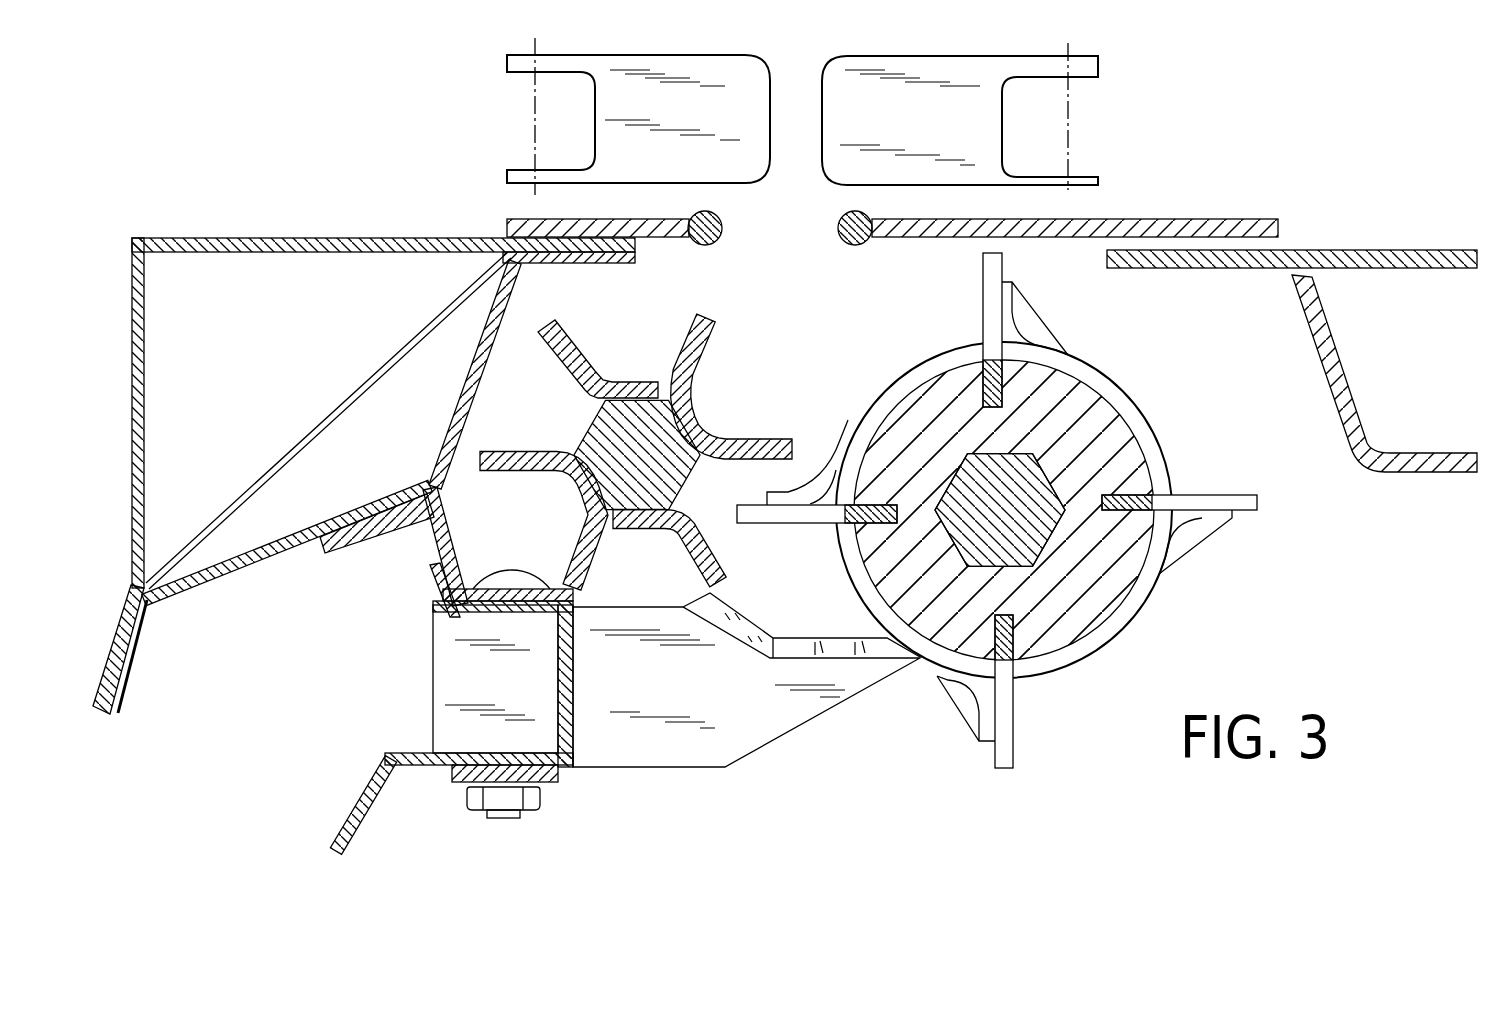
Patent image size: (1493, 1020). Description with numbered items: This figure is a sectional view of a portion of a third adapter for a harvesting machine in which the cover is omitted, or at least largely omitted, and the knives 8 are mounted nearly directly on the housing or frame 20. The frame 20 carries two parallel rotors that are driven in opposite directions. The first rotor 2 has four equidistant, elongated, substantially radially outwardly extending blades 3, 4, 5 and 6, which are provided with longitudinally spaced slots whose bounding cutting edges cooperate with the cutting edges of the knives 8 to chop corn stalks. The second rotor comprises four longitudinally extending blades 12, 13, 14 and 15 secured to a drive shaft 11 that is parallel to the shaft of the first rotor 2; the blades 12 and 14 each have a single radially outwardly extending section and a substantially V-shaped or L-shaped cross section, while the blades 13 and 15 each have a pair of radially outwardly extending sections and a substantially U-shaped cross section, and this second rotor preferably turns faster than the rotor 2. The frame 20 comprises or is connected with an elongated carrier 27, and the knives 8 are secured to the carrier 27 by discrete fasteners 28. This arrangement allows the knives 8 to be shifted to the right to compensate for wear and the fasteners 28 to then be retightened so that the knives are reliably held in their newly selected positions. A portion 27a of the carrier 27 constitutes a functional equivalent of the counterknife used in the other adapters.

The rotor 2 is at (1095, 578).
The blade 3 is at (1024, 265).
The blade 4 is at (759, 546).
The blade 5 is at (1034, 732).
The blade 6 is at (1224, 476).
The knives 8 is at (763, 710).
The drive shaft 11 is at (663, 443).
The blade 12 is at (596, 328).
The blade 13 is at (742, 305).
The blade 14 is at (723, 544).
The blade 15 is at (507, 433).
The housing or frame 20 is at (321, 207).
The elongated carrier 27 is at (433, 543).
The portion of the carrier 27a is at (583, 607).
The fasteners 28 is at (469, 844).